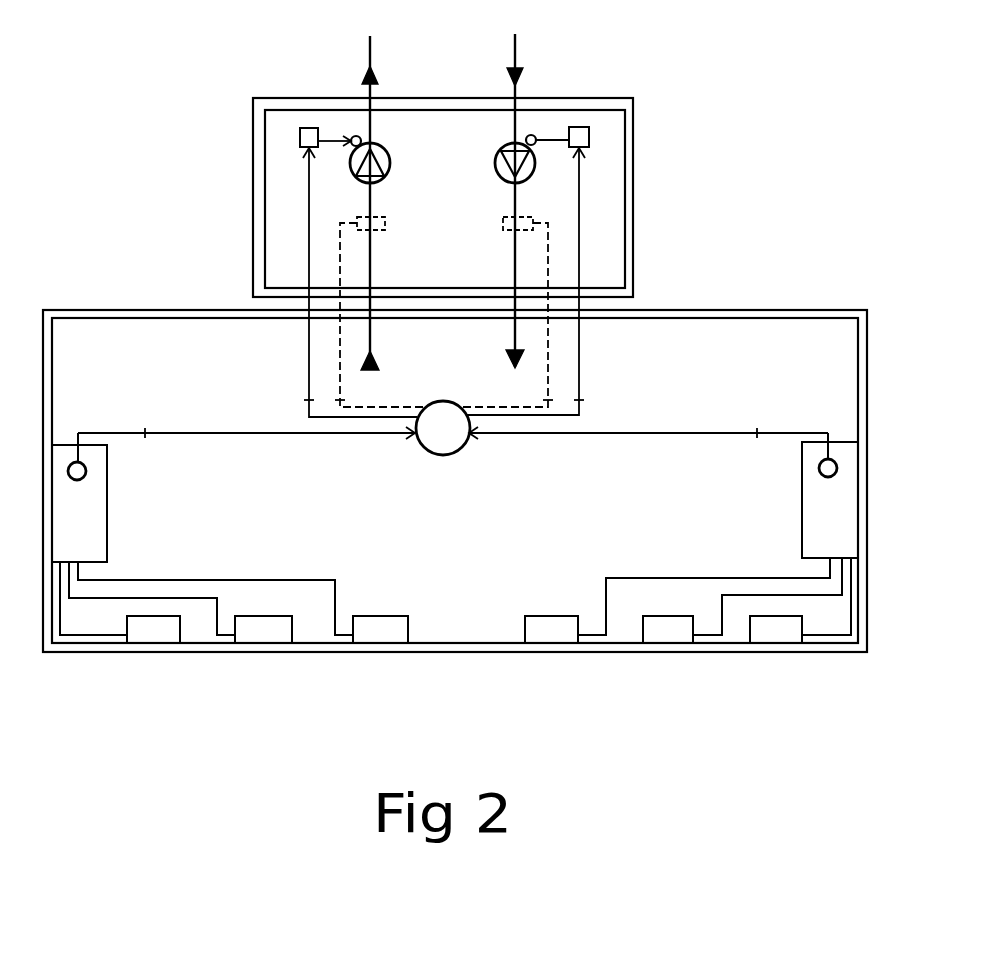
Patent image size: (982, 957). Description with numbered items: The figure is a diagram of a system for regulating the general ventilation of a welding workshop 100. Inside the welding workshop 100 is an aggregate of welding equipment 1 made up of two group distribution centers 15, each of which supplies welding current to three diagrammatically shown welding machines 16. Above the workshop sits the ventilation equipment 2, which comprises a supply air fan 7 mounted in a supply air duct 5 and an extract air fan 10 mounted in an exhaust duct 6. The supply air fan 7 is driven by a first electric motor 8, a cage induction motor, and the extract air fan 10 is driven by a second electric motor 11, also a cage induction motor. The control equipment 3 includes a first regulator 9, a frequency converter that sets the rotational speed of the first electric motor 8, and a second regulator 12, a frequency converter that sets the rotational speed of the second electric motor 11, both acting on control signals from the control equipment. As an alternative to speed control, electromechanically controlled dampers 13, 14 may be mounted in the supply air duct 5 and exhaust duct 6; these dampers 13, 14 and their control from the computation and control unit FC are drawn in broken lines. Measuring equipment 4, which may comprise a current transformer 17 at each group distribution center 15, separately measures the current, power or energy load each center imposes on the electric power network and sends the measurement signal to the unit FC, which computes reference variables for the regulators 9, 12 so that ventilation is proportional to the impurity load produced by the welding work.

The welding equipment 1 is at (564, 594).
The ventilation equipment 2 is at (634, 178).
The control equipment 3 is at (482, 424).
The measuring equipment 4 is at (86, 477).
The supply air duct 5 is at (515, 184).
The exhaust duct 6 is at (370, 185).
The supply air fan 7 is at (505, 147).
The first electric motor 8 is at (531, 135).
The first regulator 9 is at (581, 127).
The extract air fan 10 is at (380, 146).
The second electric motor 11 is at (354, 136).
The second regulator 12 is at (300, 133).
The regulating means 13 is at (387, 229).
The regulating means 14 is at (503, 229).
The group distribution center 15 is at (98, 508).
The welding machine 16 is at (152, 637).
The current transformer 17 is at (86, 470).
The welding workshop 100 is at (168, 337).